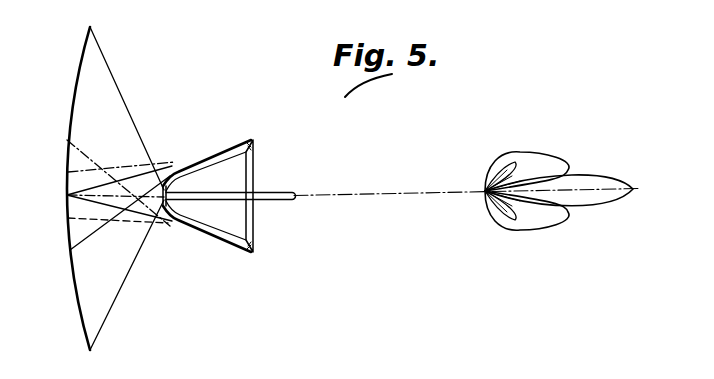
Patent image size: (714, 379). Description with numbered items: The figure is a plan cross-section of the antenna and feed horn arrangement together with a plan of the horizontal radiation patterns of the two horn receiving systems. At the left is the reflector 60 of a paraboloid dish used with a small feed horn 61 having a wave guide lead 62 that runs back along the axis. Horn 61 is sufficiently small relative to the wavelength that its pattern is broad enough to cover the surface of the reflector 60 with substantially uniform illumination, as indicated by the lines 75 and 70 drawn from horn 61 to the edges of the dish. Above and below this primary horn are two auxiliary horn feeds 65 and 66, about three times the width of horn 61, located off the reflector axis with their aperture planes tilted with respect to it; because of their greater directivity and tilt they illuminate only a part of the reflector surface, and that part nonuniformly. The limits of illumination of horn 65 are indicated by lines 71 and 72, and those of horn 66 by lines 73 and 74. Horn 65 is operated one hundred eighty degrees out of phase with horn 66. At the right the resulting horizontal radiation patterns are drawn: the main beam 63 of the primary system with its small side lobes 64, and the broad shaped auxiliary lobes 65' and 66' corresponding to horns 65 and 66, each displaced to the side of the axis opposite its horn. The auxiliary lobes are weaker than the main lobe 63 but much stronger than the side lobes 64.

The reflector 60 is at (62, 121).
The feed horn 61 is at (168, 190).
The wave guide lead 62 is at (292, 191).
The main beam 63 is at (603, 178).
The side lobes 64 is at (512, 168).
The horn feed 65 is at (207, 229).
The horn feed 66 is at (207, 160).
The pattern of horn 65 65' is at (537, 160).
The pattern of horn 66 66' is at (529, 227).
The line of illumination 70 is at (118, 296).
The limit of illumination line 71 is at (120, 223).
The limit of illumination line 72 is at (87, 148).
The limit of illumination line 73 is at (85, 242).
The limit of illumination line 74 is at (120, 166).
The line of illumination 75 is at (116, 82).